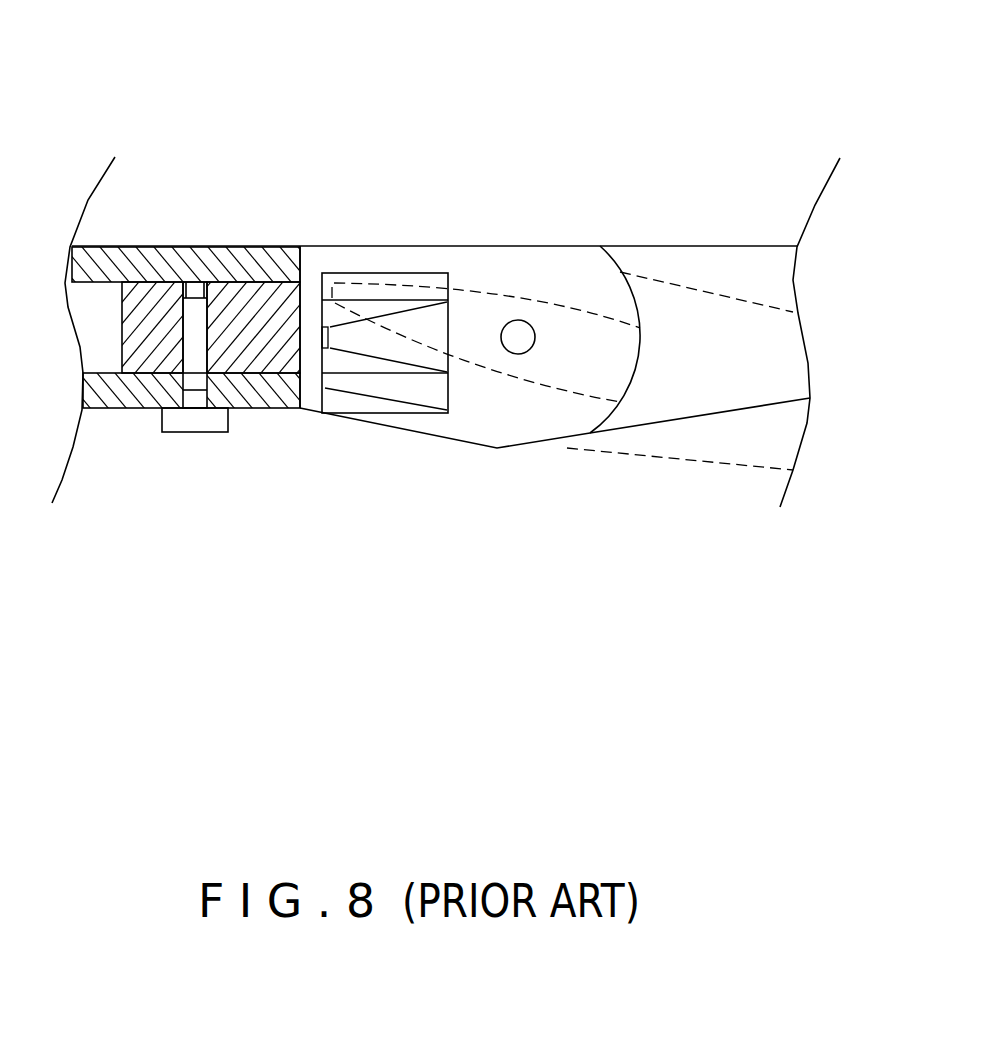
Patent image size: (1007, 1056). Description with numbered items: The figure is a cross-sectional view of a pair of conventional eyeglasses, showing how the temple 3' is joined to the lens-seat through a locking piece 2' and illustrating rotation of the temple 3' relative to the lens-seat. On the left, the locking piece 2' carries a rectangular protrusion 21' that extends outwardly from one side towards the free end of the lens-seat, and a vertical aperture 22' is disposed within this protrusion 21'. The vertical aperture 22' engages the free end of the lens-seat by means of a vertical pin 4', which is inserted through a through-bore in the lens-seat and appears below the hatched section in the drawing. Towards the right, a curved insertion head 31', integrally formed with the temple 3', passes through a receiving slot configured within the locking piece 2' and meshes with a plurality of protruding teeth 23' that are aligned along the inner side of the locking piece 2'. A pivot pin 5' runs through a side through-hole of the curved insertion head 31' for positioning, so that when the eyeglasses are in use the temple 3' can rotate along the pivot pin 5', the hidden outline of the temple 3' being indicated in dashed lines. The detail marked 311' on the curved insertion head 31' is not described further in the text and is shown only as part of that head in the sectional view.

The locking piece 2' is at (424, 265).
The temple 3' is at (720, 265).
The rectangular protrusion 21' is at (251, 227).
The vertical aperture 22' is at (236, 217).
The protruding teeth 23' is at (384, 199).
The curved insertion head 31' is at (375, 340).
The inclined groove 311' is at (359, 520).
The vertical pin 4' is at (193, 530).
The pivot pin 5' is at (572, 485).